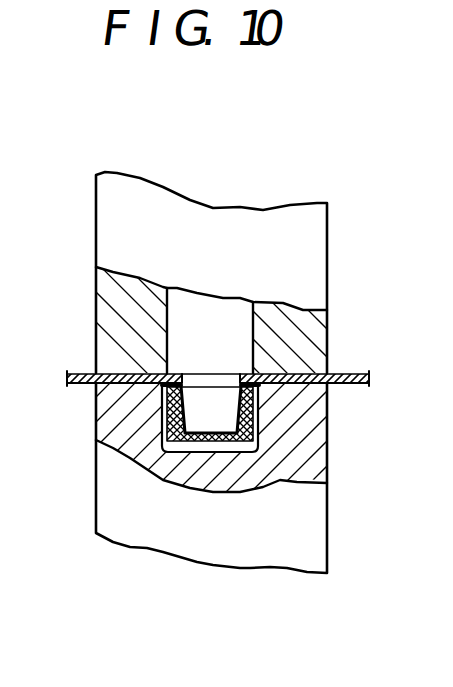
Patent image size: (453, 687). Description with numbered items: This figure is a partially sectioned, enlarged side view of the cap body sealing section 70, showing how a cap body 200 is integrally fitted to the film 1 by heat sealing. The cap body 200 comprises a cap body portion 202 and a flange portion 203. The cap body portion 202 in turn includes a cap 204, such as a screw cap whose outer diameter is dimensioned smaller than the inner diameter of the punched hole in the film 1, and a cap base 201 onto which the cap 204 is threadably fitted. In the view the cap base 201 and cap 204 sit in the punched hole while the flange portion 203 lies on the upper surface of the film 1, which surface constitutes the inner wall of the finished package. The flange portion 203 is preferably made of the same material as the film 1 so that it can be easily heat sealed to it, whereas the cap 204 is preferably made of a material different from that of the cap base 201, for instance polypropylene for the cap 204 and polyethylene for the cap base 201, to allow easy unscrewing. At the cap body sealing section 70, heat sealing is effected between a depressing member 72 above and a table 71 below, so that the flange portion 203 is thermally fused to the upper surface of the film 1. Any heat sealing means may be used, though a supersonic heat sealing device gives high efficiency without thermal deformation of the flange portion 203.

The cap body sealing section 70 is at (341, 234).
The depressing member 72 is at (311, 283).
The flange portion 203 is at (125, 372).
The film 1 is at (353, 382).
The cap body 200 is at (261, 516).
The cap base 201 is at (183, 441).
The cap 204 is at (217, 441).
The cap body portion 202 is at (219, 516).
The table 71 is at (310, 520).